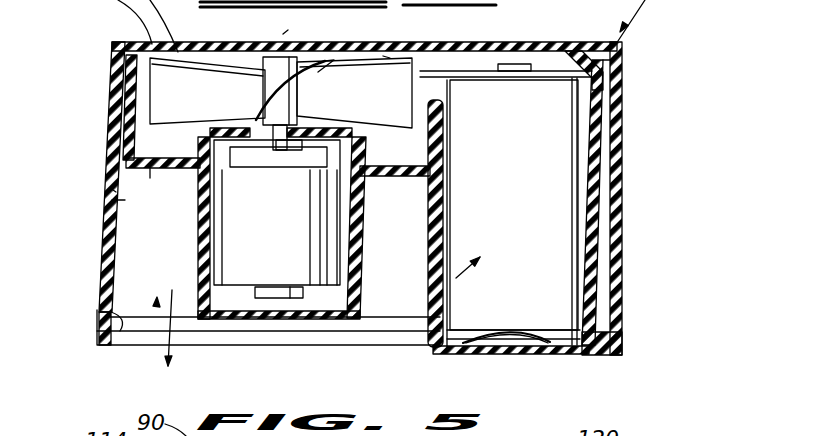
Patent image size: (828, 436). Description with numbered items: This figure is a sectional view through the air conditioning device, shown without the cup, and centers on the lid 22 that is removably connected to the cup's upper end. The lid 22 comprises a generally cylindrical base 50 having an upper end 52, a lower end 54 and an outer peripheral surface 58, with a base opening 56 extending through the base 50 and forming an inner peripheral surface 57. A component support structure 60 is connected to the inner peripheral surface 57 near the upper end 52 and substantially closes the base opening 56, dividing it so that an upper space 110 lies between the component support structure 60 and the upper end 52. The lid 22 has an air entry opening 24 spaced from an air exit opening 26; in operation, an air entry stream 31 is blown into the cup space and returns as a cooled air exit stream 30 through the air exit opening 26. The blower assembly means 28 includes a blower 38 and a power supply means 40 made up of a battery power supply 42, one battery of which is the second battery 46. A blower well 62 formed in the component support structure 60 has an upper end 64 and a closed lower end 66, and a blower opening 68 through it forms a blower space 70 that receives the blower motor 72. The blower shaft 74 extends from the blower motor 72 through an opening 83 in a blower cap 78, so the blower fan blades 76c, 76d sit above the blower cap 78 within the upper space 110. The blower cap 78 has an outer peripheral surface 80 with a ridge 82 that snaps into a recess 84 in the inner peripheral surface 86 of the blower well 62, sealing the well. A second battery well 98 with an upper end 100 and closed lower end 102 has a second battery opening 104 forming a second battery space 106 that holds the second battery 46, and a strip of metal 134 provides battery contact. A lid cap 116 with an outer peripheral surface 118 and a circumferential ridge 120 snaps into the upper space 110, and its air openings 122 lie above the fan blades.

The lid 22 is at (624, 188).
The air entry opening 24 is at (142, 204).
The air exit opening 26 is at (601, 335).
The blower assembly means 28 is at (247, 130).
The air exit stream 30 is at (624, 282).
The air entry stream 31 is at (172, 315).
The blower 38 is at (231, 207).
The power supply means 40 is at (559, 216).
The battery power supply 42 is at (563, 137).
The second battery 46 is at (600, 153).
The base 50 is at (112, 86).
The upper end of base 52 is at (120, 42).
The lower end of base 54 is at (100, 347).
The base opening 56 is at (120, 340).
The inner peripheral surface 57 is at (110, 188).
The outer peripheral surface of base 58 is at (622, 86).
The component support structure 60 is at (153, 172).
The blower well 62 is at (219, 328).
The upper end of blower well 64 is at (379, 123).
The lower end of blower well 66 is at (333, 333).
The blower opening 68 is at (202, 233).
The blower space 70 is at (256, 318).
The blower motor 72 is at (320, 255).
The blower shaft 74 is at (283, 140).
The blower fan blade 76c is at (336, 52).
The blower fan blade 76d is at (383, 56).
The blower cap 78 is at (226, 130).
The outer peripheral surface of blower cap 80 is at (362, 137).
The ridge 82 is at (187, 157).
The opening in blower cap 83 is at (354, 176).
The recess 84 is at (204, 152).
The inner peripheral surface of blower well 86 is at (208, 253).
The second battery well 98 is at (493, 355).
The upper end of second battery well 100 is at (559, 45).
The lower end of second battery well 102 is at (524, 350).
The second battery opening 104 is at (444, 217).
The second battery space 106 is at (434, 282).
The upper space 110 is at (205, 63).
The lid cap 116 is at (457, 45).
The outer peripheral surface of lid cap 118 is at (148, 70).
The ridge 120 is at (617, 46).
The air opening 122 is at (288, 30).
The strip of metal 134 is at (498, 328).